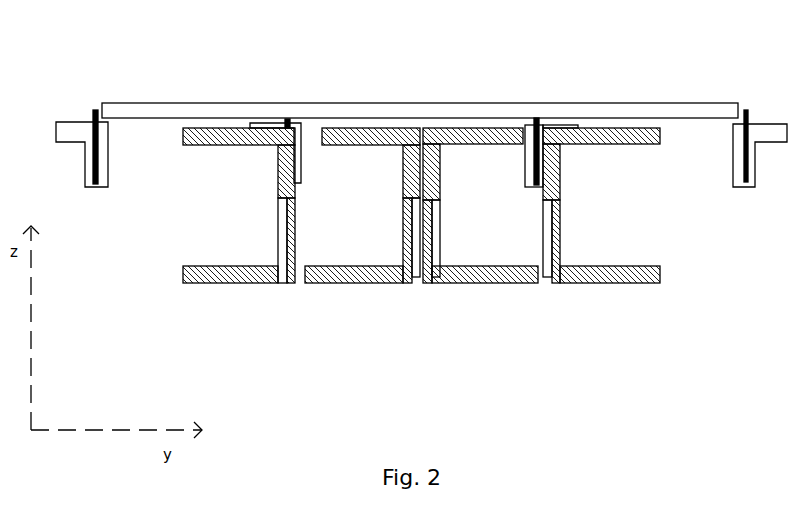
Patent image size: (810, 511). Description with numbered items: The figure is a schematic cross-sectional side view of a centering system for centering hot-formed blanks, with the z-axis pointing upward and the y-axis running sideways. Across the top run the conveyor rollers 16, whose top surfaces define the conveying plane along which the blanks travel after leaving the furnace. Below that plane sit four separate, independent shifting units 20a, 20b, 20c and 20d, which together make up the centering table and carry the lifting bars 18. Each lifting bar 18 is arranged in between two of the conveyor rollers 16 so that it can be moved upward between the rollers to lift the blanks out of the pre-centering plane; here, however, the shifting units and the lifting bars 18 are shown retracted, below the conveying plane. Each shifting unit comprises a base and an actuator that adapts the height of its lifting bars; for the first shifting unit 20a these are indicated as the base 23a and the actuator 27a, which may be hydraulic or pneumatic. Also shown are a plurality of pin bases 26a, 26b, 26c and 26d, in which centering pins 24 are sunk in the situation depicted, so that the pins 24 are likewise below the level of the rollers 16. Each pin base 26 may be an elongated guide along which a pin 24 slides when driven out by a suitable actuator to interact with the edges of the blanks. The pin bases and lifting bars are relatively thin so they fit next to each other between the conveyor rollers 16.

The conveyor roller 16 is at (382, 110).
The lifting bar 18 is at (611, 175).
The shifting unit 20a is at (193, 244).
The shifting unit 20b is at (373, 303).
The shifting unit 20c is at (513, 302).
The shifting unit 20d is at (611, 260).
The base 23a is at (223, 270).
The centering pin 24 is at (744, 185).
The pin base 26 is at (732, 158).
The pin base 26a is at (72, 122).
The pin base 26b is at (287, 120).
The pin base 26c is at (549, 122).
The pin base 26d is at (738, 163).
The actuator 27a is at (292, 283).